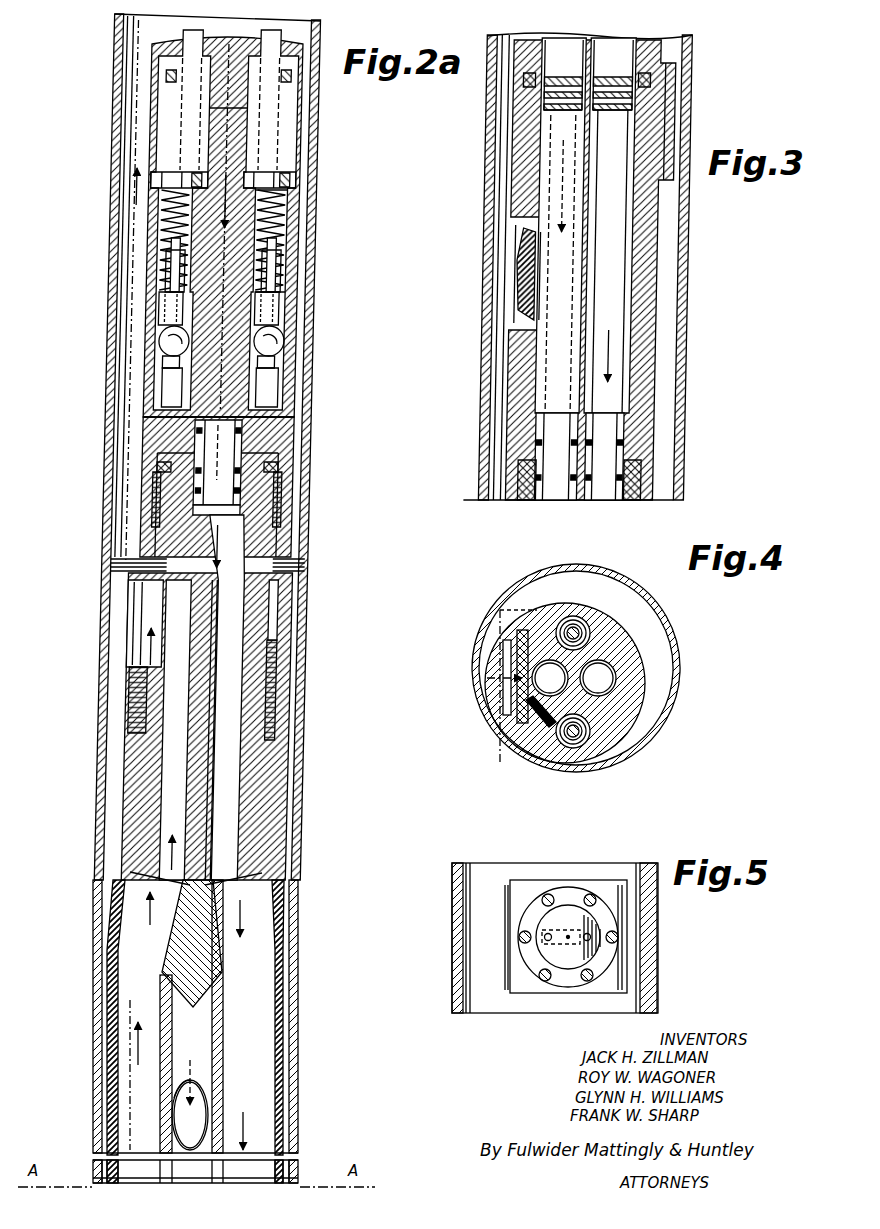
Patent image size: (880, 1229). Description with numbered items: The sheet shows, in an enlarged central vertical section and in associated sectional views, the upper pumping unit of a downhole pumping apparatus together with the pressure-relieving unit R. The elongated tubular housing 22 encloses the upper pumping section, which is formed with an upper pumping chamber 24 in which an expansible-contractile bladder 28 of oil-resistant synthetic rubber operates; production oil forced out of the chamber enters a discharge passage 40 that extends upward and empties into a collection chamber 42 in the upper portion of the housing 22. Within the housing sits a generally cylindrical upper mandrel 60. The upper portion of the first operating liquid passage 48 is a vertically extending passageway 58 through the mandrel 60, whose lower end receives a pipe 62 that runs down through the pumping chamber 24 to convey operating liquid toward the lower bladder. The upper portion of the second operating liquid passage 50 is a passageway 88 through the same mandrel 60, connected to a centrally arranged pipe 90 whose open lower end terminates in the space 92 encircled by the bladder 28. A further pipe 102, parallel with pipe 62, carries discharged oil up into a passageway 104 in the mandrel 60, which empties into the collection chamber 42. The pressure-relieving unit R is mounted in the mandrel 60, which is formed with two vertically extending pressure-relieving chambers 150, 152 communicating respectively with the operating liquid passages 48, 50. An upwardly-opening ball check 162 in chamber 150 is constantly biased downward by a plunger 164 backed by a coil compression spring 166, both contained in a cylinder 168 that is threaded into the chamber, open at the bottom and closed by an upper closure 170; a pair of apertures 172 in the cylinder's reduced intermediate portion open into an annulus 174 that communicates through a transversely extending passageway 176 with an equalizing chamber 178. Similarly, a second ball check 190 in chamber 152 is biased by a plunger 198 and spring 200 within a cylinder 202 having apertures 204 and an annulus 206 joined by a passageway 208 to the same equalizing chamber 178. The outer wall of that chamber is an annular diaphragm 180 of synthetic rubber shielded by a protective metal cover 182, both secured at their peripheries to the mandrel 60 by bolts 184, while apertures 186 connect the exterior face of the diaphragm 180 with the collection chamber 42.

In FIG. 3, the tubular housing 22 is at (694, 135).
In FIG. 2A, the upper pumping chamber 24 is at (290, 1080).
In FIG. 2A, the upper bladder 28 is at (282, 1040).
In FIG. 2A, the discharge passage 40 is at (118, 950).
In FIG. 2A, the collection chamber 42 is at (131, 470).
In FIG. 2A, the first operating liquid passage 48 is at (250, 645).
In FIG. 3, the first operating liquid passage 48 is at (624, 232).
In FIG. 4, the first operating liquid passage 48 is at (607, 682).
In FIG. 3, the second operating liquid passage 50 is at (558, 158).
In FIG. 4, the second operating liquid passage 50 is at (560, 668).
In FIG. 2A, the passageway 58 is at (263, 775).
In FIG. 3, the passageway 58 is at (630, 267).
In FIG. 2A, the upper mandrel 60 is at (274, 704).
In FIG. 3, the upper mandrel 60 is at (660, 367).
In FIG. 4, the upper mandrel 60 is at (640, 703).
In FIG. 2A, the pipe 62 is at (268, 942).
In FIG. 3, the passageway 88 is at (558, 187).
In FIG. 2A, the pipe 90 is at (172, 1100).
In FIG. 2A, the space 92 is at (205, 1030).
In FIG. 2A, the pipe 102 is at (118, 1028).
In FIG. 2A, the passageway 104 is at (168, 765).
In FIG. 2A, the pressure-relieving chamber 150 is at (293, 330).
In FIG. 4, the pressure-relieving chamber 150 is at (586, 742).
In FIG. 2A, the pressure-relieving chamber 152 is at (170, 324).
In FIG. 4, the pressure-relieving chamber 152 is at (583, 622).
In FIG. 2A, the ball check 162 is at (290, 346).
In FIG. 2A, the plunger 164 is at (317, 300).
In FIG. 2A, the coil compression spring 166 is at (297, 204).
In FIG. 2A, the cylinder 168 is at (305, 222).
In FIG. 4, the cylinder 168 is at (577, 745).
In FIG. 2A, the upper closure 170 is at (304, 180).
In FIG. 2A, the apertures 172 is at (299, 266).
In FIG. 4, the apertures 172 is at (567, 745).
In FIG. 2A, the annulus 174 is at (294, 276).
In FIG. 4, the annulus 174 is at (587, 733).
In FIG. 4, the transversely extending passageway 176 is at (558, 717).
In FIG. 5, the transversely extending passageway 176 is at (592, 938).
In FIG. 4, the equalizing chamber 178 is at (550, 713).
In FIG. 3, the diaphragm 180 is at (565, 282).
In FIG. 4, the diaphragm 180 is at (520, 682).
In FIG. 3, the protective metal cover 182 is at (524, 248).
In FIG. 4, the protective metal cover 182 is at (508, 658).
In FIG. 5, the protective metal cover 182 is at (566, 908).
In FIG. 5, the bolts 184 is at (590, 935).
In FIG. 3, the apertures 186 is at (527, 285).
In FIG. 4, the apertures 186 is at (517, 675).
In FIG. 5, the apertures 186 is at (568, 942).
In FIG. 2A, the ball check 190 is at (173, 350).
In FIG. 2A, the plunger 198 is at (169, 298).
In FIG. 2A, the coil compression spring 200 is at (171, 222).
In FIG. 2A, the cylinder 202 is at (165, 205).
In FIG. 4, the cylinder 202 is at (590, 632).
In FIG. 2A, the apertures 204 is at (171, 263).
In FIG. 4, the apertures 204 is at (590, 635).
In FIG. 2A, the annulus 206 is at (172, 274).
In FIG. 4, the annulus 206 is at (568, 618).
In FIG. 4, the transversely extending passageway 208 is at (548, 647).
In FIG. 5, the transversely extending passageway 208 is at (548, 933).
In FIG. 2A, the pressure-relieving unit R is at (306, 245).